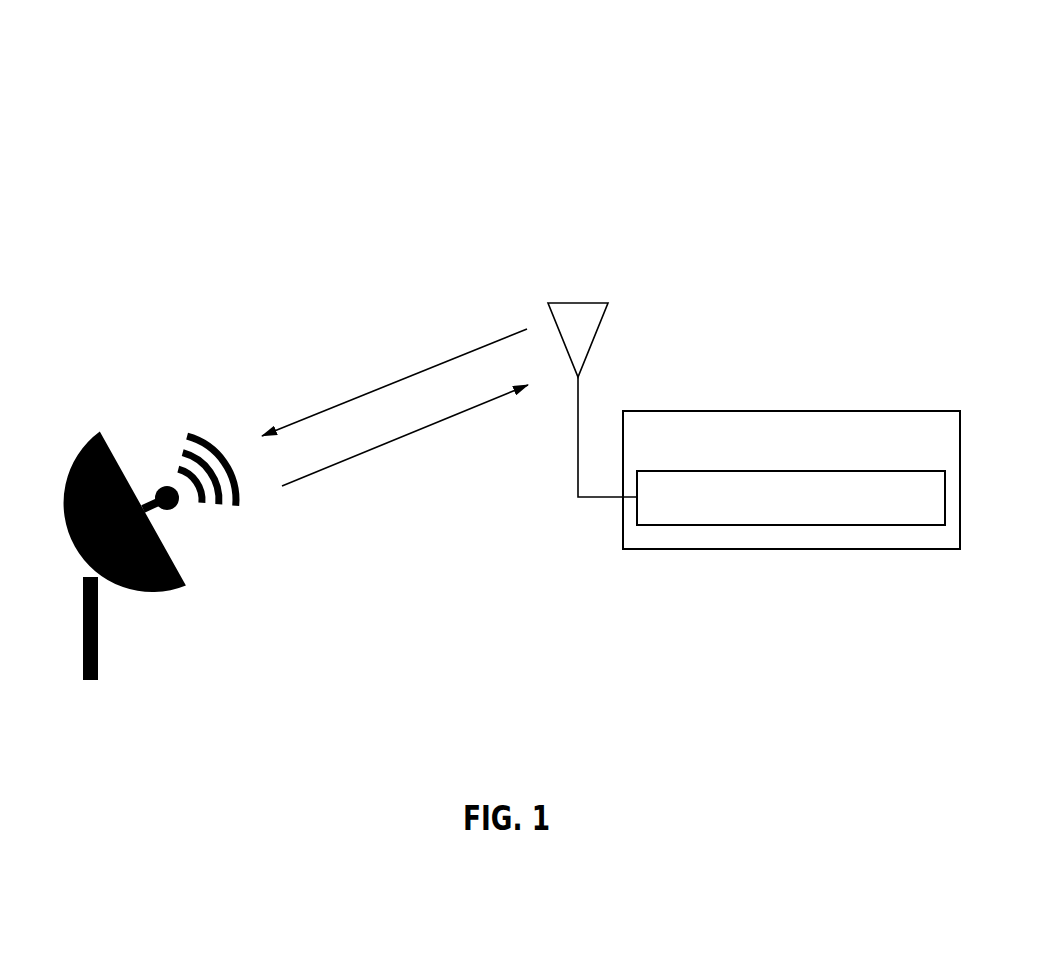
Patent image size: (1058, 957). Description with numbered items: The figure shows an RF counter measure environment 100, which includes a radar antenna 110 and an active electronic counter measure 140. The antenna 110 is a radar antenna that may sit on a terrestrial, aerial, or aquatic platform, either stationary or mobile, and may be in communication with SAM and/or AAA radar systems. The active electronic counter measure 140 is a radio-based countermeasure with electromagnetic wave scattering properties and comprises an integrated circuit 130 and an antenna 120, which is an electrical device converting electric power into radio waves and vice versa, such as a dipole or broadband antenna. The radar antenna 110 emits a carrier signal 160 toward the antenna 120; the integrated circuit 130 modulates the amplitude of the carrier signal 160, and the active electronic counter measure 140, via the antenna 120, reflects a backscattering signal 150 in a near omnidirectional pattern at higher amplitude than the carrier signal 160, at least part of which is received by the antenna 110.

The RF counter measure environment 100 is at (512, 345).
The antenna 110 is at (150, 527).
The antenna 120 is at (592, 366).
The integrated circuit 130 is at (791, 534).
The active electronic counter measure 140 is at (791, 472).
The backscattering signal 150 is at (394, 374).
The carrier signal 160 is at (405, 444).